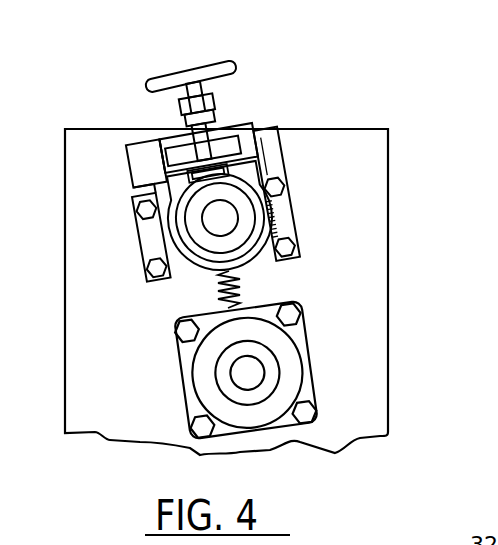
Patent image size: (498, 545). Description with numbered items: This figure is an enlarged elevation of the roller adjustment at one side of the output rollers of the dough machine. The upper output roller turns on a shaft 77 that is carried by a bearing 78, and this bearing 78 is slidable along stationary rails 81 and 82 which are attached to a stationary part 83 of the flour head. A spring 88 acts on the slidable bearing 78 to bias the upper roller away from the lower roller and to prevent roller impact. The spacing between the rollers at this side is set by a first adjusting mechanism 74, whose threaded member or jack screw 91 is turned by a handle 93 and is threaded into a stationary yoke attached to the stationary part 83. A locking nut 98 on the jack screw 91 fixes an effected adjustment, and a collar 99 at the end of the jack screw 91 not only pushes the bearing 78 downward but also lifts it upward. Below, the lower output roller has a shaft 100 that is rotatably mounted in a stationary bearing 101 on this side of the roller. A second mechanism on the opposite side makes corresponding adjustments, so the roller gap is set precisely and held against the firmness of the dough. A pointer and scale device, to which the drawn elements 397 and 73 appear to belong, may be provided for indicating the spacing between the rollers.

The side clamp plate 73 is at (300, 239).
The first adjusting mechanism 74 is at (222, 117).
The shaft 77 is at (205, 218).
The bearing 78 is at (201, 272).
The stationary rail 81 is at (147, 228).
The stationary rail 82 is at (265, 206).
The stationary part 83 is at (355, 131).
The spring 88 is at (238, 297).
The jack screw 91 is at (212, 112).
The handle 93 is at (237, 70).
The locking nut 98 is at (175, 122).
The collar 99 is at (166, 176).
The shaft 100 is at (235, 370).
The stationary bearing 101 is at (313, 373).
The spring clip 397 is at (300, 158).